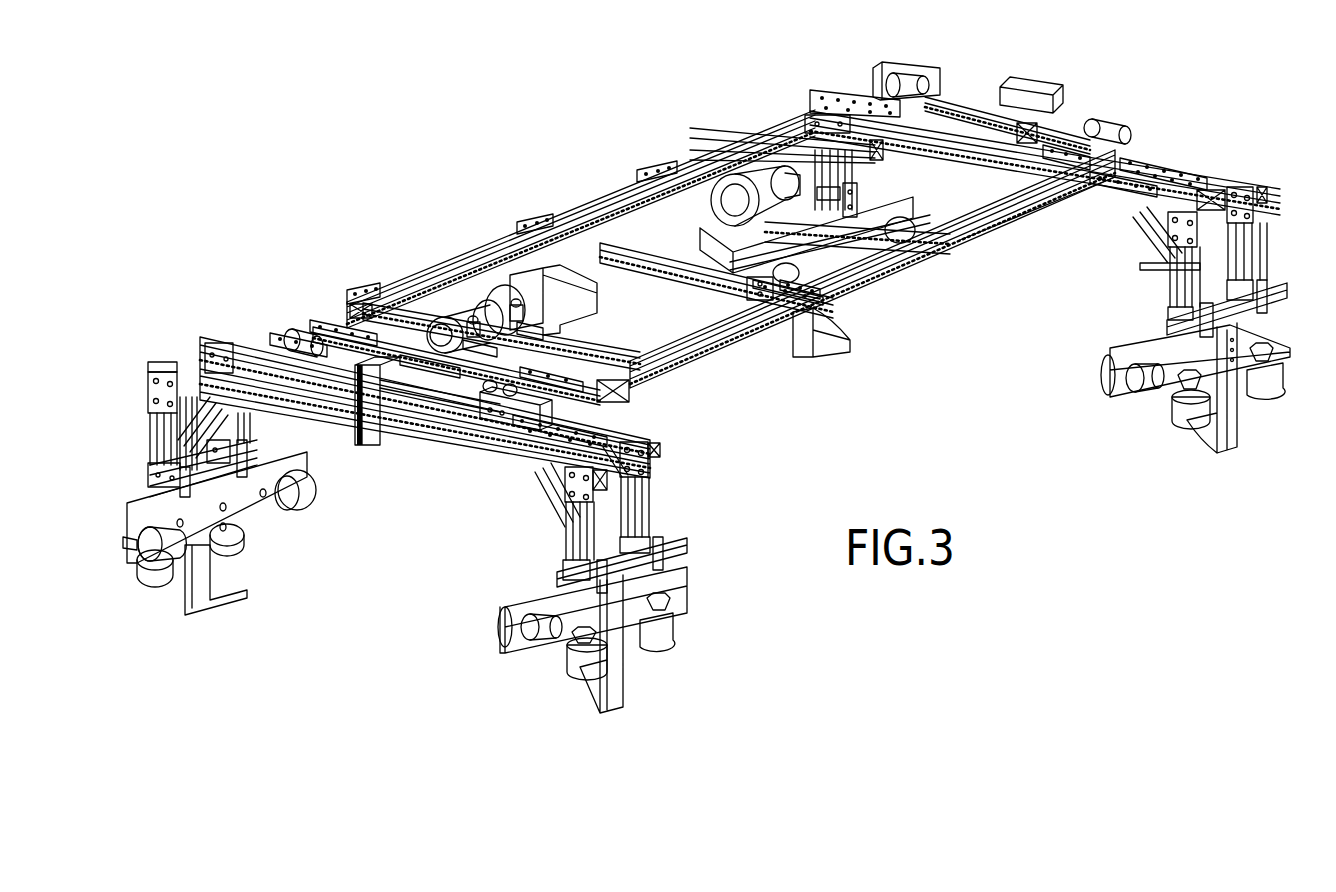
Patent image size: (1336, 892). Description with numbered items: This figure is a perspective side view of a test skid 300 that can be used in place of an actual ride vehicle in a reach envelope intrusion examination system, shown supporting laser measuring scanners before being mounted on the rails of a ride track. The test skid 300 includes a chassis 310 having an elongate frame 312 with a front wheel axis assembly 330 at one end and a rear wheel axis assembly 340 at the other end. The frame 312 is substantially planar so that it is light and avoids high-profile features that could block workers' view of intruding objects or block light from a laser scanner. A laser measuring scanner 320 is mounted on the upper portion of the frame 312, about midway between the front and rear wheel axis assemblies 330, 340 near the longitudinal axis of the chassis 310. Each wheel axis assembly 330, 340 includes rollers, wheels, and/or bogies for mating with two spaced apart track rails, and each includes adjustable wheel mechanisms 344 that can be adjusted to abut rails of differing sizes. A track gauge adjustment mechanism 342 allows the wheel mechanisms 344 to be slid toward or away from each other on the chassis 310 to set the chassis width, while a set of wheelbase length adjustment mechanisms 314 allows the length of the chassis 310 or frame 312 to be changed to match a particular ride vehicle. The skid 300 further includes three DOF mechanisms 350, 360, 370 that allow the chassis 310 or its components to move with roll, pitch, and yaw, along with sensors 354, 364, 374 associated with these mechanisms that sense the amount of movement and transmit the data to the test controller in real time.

The test skid 300 is at (252, 198).
The chassis 310 is at (700, 380).
The frame 312 is at (1000, 250).
The wheelbase length adjustment mechanisms 314 is at (905, 275).
The laser measuring scanner 320 is at (726, 173).
The front wheel axis assembly 330 is at (1246, 165).
The rear wheel axis assembly 340 is at (175, 354).
The track gauge adjustment mechanism 342 is at (493, 483).
The adjustable wheel mechanisms 344 is at (423, 643).
The DOF mechanism 350 is at (578, 406).
The sensor 354 is at (650, 387).
The DOF mechanism 360 is at (456, 318).
The sensor 364 is at (545, 275).
The DOF mechanism 370 is at (390, 463).
The sensor 374 is at (418, 398).